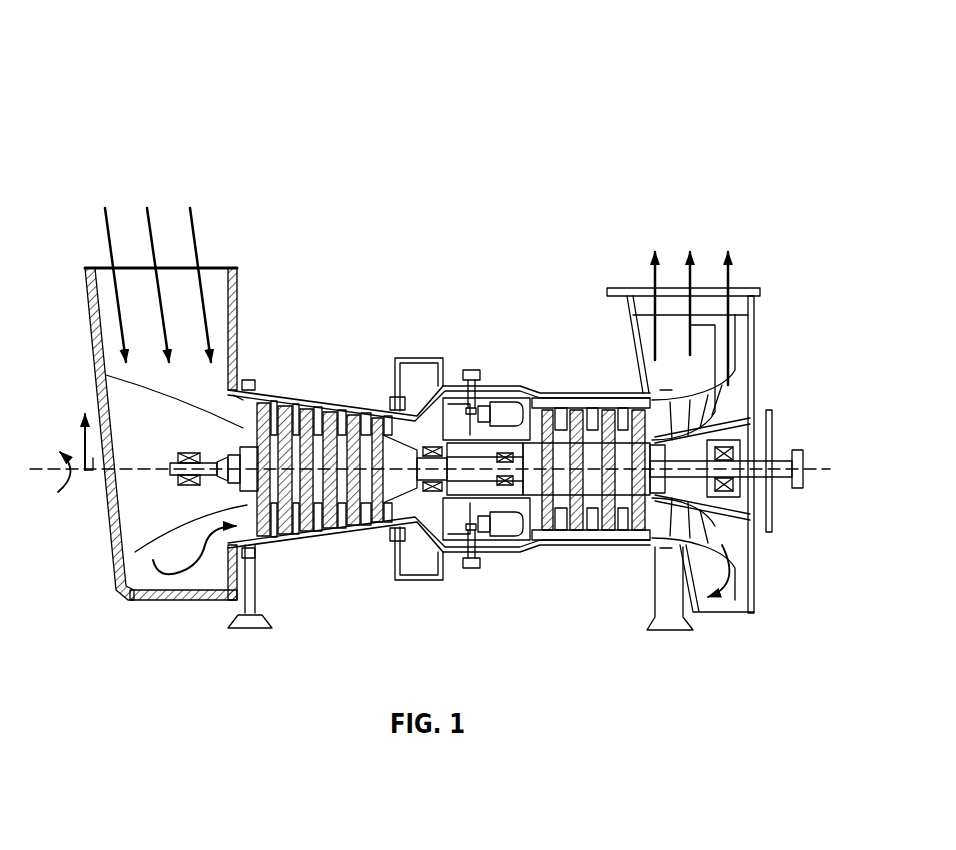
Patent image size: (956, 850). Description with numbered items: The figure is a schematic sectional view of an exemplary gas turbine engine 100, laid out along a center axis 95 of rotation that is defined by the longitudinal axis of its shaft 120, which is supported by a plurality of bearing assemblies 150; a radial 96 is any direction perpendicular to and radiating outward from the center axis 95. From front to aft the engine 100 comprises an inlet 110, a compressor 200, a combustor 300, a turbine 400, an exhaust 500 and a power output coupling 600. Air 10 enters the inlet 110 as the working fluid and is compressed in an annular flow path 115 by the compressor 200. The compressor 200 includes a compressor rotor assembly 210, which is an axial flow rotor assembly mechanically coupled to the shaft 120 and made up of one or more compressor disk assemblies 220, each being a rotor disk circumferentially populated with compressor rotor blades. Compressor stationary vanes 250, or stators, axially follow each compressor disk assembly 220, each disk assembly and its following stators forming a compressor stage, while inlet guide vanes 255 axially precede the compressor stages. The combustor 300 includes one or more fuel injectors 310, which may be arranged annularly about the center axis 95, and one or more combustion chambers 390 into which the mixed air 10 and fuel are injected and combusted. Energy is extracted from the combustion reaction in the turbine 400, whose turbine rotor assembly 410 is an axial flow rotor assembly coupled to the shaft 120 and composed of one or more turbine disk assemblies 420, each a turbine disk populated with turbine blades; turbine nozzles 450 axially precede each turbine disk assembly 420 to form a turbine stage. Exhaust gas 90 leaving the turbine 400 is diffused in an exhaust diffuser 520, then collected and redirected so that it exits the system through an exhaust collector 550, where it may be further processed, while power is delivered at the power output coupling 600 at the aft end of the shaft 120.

The gas turbine engine 100 is at (116, 46).
The air 10 is at (107, 240).
The inlet 110 is at (235, 186).
The annular flow path 115 is at (219, 401).
The shaft 120 is at (192, 455).
The bearing assemblies 150 is at (198, 486).
The radial 96 is at (80, 438).
The center axis 95 is at (57, 485).
The compressor 200 is at (420, 186).
The compressor rotor assembly 210 is at (321, 596).
The compressor disk assemblies 220 is at (303, 537).
The compressor stationary vanes 250 is at (318, 415).
The inlet guide vanes 255 is at (262, 388).
The combustor 300 is at (520, 186).
The fuel injectors 310 is at (470, 405).
The combustion chambers 390 is at (505, 400).
The turbine 400 is at (645, 186).
The turbine rotor assembly 410 is at (592, 598).
The turbine disk assemblies 420 is at (578, 535).
The turbine nozzles 450 is at (628, 415).
The exhaust 500 is at (780, 212).
The exhaust diffuser 520 is at (663, 388).
The exhaust collector 550 is at (622, 332).
The exhaust gas 90 is at (652, 278).
The power output coupling 600 is at (800, 450).